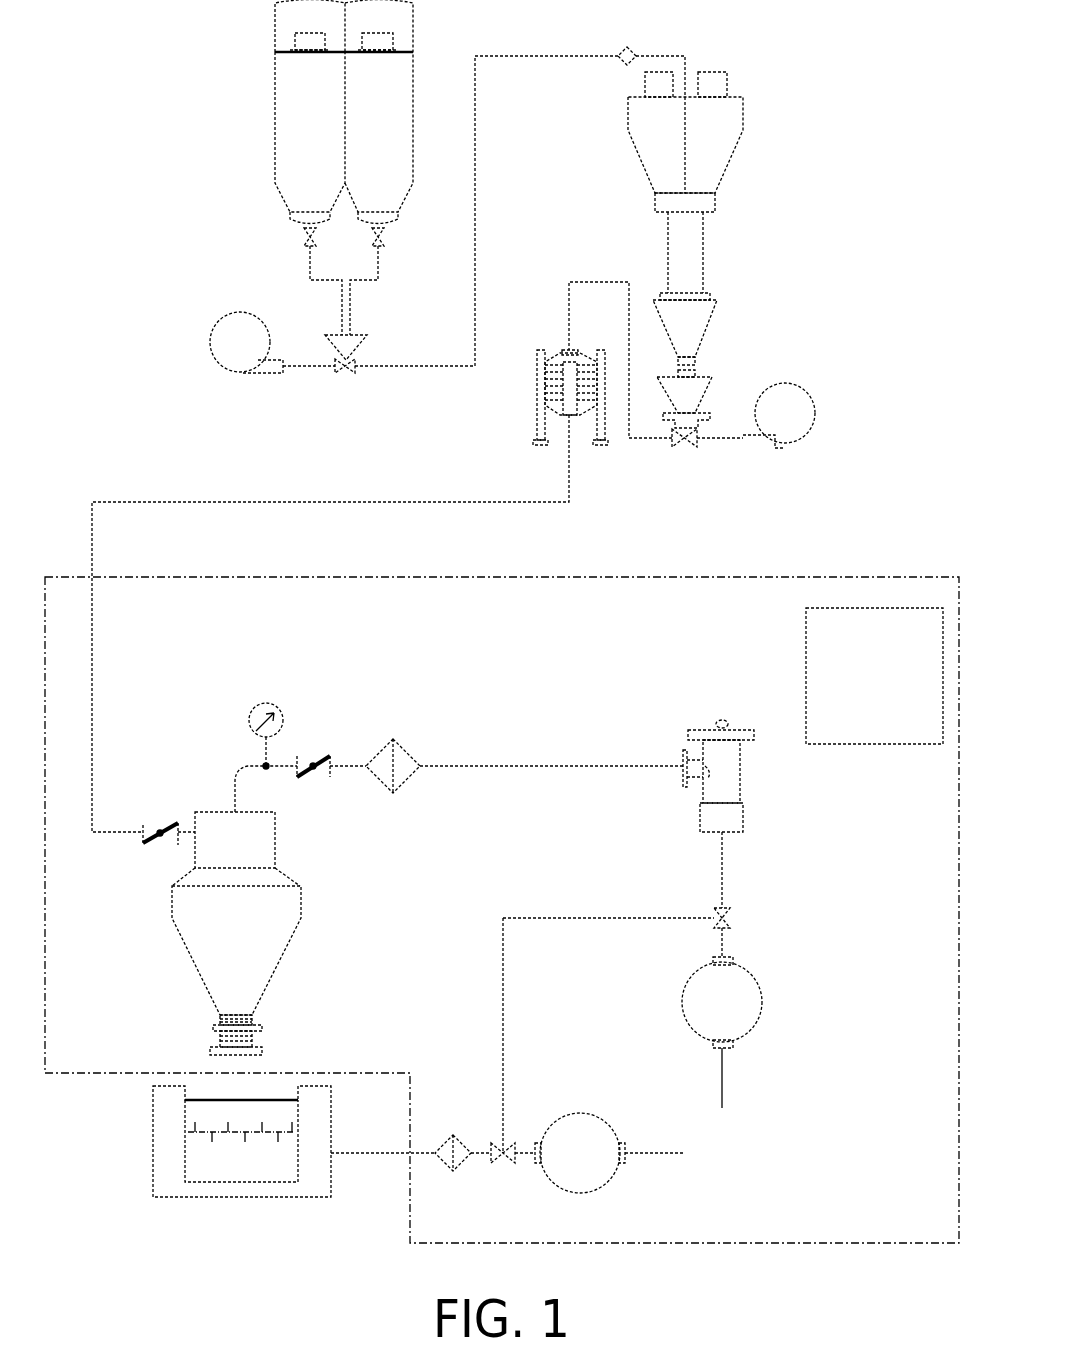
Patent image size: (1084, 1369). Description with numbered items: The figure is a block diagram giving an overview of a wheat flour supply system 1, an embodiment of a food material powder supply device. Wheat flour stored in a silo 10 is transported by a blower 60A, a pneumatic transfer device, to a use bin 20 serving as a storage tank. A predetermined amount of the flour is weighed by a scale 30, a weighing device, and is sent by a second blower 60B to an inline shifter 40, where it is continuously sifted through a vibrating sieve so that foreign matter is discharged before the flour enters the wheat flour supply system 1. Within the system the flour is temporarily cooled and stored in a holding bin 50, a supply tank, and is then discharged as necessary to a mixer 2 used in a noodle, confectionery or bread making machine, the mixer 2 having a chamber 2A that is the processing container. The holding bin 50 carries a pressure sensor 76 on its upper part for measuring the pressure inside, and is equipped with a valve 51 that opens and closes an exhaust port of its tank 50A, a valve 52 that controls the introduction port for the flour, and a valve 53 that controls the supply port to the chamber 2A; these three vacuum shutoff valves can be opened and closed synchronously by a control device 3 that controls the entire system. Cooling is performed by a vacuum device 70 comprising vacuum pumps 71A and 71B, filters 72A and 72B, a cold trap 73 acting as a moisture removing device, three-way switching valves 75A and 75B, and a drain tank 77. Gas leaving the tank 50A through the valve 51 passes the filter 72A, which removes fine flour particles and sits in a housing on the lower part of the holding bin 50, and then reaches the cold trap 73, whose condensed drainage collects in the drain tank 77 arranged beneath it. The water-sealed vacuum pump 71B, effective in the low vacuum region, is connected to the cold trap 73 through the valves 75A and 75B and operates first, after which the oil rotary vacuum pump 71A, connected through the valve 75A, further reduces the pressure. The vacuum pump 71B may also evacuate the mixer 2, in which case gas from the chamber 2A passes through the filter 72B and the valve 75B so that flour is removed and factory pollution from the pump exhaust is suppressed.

The wheat flour supply system 1 is at (415, 578).
The mixer 2 is at (133, 1190).
The chamber 2A is at (163, 1112).
The control device 3 is at (805, 617).
The silo 10 is at (413, 58).
The use bin 20 is at (735, 97).
The scale 30 is at (727, 376).
The inline shifter 40 is at (537, 385).
The holding bin 50 is at (320, 877).
The tank 50A is at (298, 910).
The valve 51 is at (330, 756).
The valve 52 is at (148, 845).
The valve 53 is at (215, 1027).
The blower 60A is at (228, 318).
The blower 60B is at (805, 385).
The vacuum device 70 is at (755, 930).
The vacuum pump 71A is at (755, 985).
The vacuum pump 71B is at (598, 1120).
The filter 72A is at (407, 780).
The filter 72B is at (460, 1165).
The cold trap 73 is at (700, 728).
The valve 75A is at (713, 907).
The valve 75B is at (502, 1136).
The pressure sensor 76 is at (249, 710).
The drain tank 77 is at (738, 818).